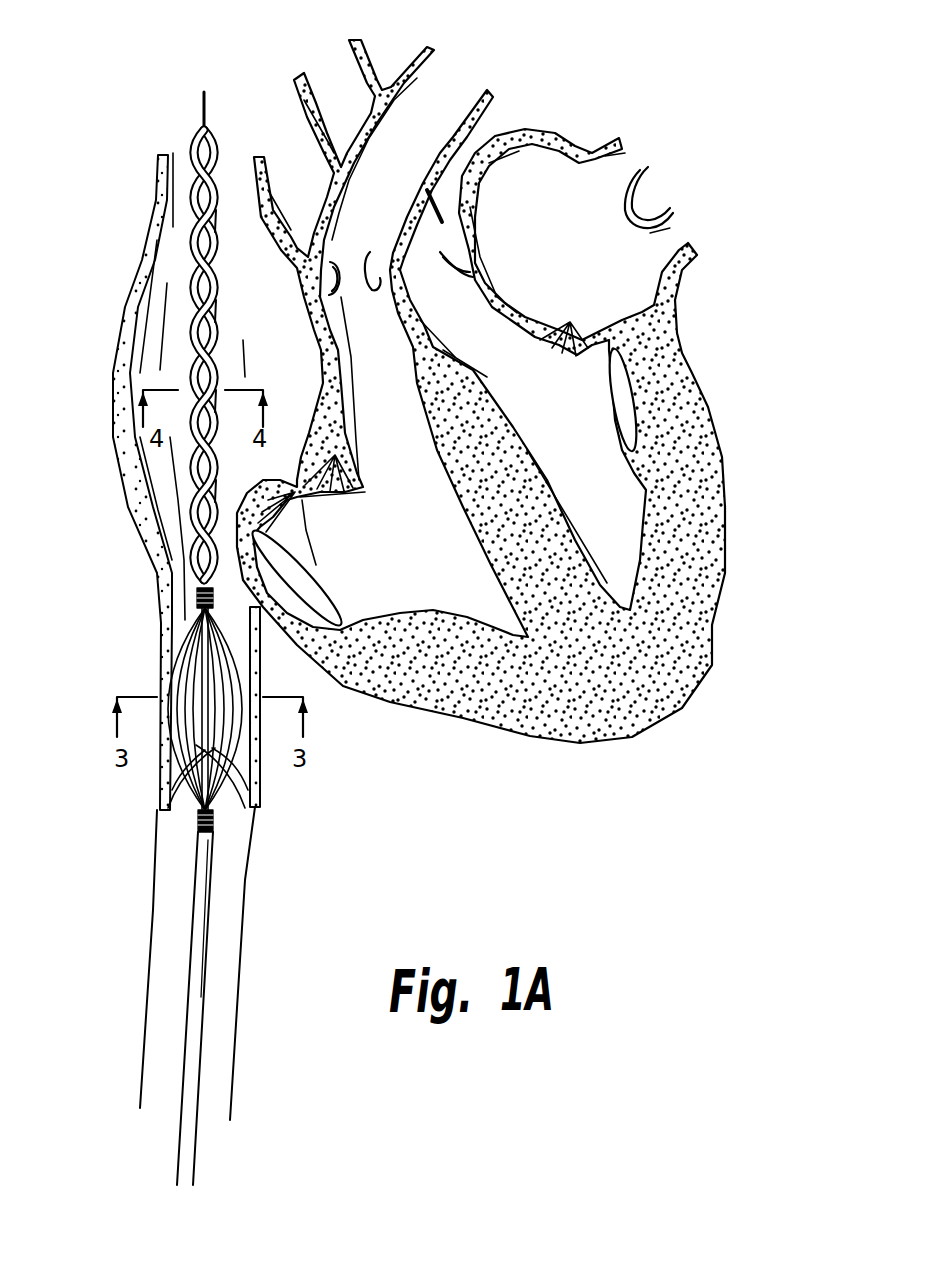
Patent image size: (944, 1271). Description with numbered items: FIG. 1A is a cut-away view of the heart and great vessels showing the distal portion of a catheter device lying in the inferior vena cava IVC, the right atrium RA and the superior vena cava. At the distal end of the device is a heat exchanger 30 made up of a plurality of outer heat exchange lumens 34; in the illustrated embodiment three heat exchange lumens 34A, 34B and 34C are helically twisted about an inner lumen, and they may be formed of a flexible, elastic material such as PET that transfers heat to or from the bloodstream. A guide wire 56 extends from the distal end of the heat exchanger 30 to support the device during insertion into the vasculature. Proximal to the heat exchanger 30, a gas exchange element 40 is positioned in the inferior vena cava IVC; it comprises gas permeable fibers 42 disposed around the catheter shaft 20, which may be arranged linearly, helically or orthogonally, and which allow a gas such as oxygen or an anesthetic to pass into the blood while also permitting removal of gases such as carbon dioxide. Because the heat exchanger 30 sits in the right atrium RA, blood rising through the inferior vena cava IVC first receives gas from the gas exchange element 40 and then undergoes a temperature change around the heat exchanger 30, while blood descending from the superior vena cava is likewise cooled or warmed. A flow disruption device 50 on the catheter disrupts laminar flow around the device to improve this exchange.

The catheter shaft 20 is at (187, 1033).
The heat exchanger 30 is at (174, 597).
The outer heat exchange lumens 34 is at (157, 318).
The heat exchange lumen 34A is at (167, 177).
The heat exchange lumen 34B is at (200, 163).
The heat exchange lumen 34C is at (214, 224).
The guide wire 56 is at (205, 112).
The gas exchange element 40 is at (192, 733).
The gas permeable fibers 42 is at (230, 757).
The flow disruption device 50 is at (194, 766).
The right atrium RA is at (172, 520).
The inferior vena cava IVC is at (247, 910).